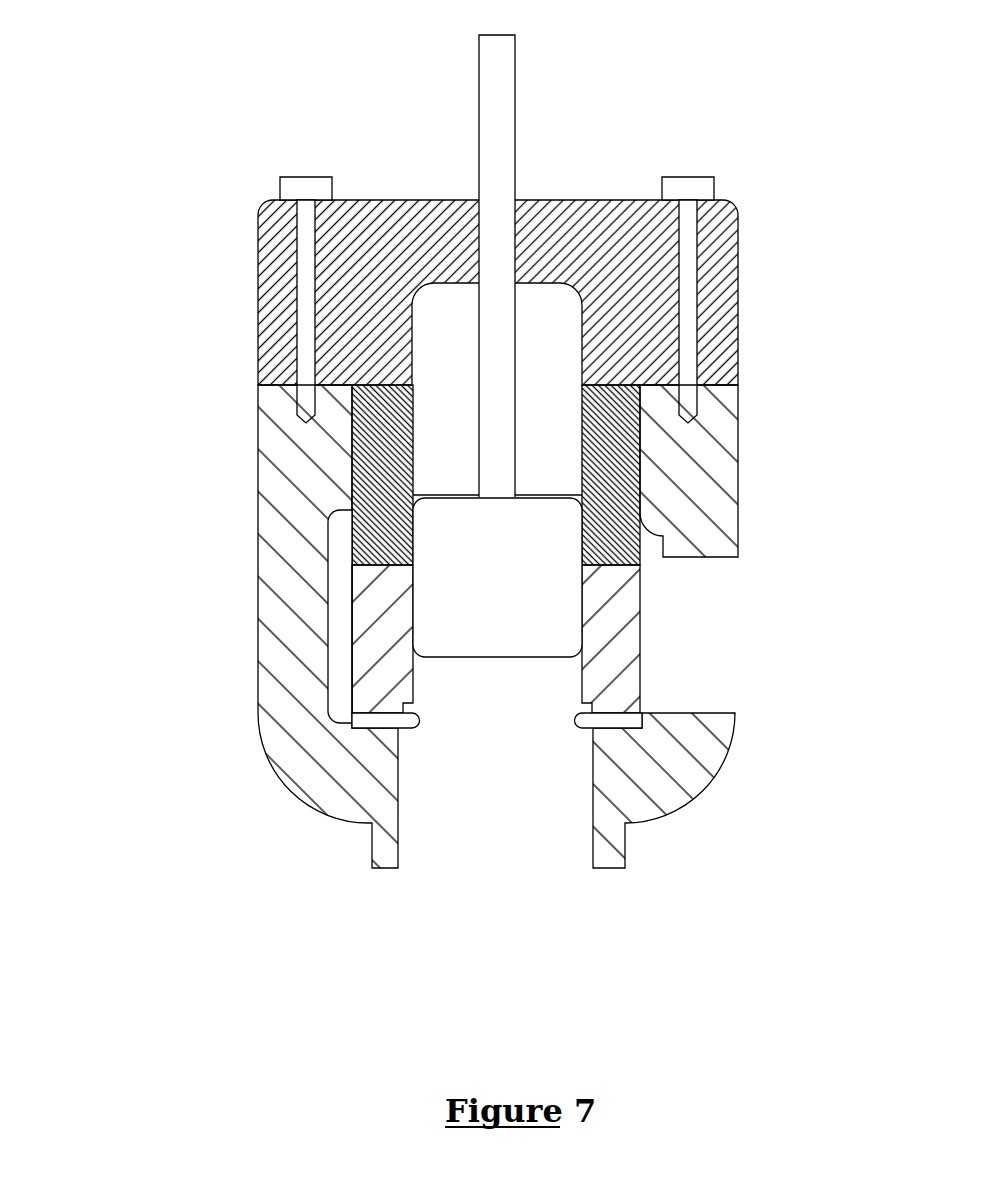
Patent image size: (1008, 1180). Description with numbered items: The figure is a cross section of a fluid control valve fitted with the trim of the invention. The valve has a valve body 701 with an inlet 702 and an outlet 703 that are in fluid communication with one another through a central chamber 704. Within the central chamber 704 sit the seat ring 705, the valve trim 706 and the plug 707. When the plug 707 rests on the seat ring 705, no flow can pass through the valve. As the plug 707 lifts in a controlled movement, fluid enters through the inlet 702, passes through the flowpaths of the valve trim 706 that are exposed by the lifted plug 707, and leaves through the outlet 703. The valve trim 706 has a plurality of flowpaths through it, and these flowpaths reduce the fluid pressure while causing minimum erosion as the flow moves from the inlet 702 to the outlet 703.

The valve body 701 is at (249, 497).
The inlet 702 is at (734, 673).
The outlet 703 is at (495, 835).
The central chamber 704 is at (318, 638).
The seat ring 705 is at (368, 765).
The valve trim 706 is at (345, 690).
The plug 707 is at (468, 616).